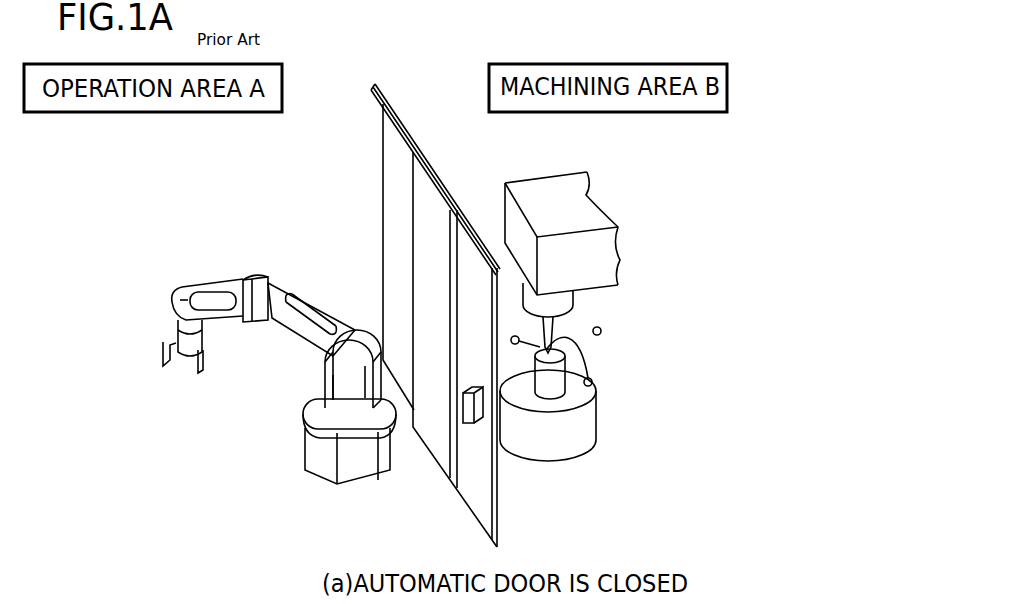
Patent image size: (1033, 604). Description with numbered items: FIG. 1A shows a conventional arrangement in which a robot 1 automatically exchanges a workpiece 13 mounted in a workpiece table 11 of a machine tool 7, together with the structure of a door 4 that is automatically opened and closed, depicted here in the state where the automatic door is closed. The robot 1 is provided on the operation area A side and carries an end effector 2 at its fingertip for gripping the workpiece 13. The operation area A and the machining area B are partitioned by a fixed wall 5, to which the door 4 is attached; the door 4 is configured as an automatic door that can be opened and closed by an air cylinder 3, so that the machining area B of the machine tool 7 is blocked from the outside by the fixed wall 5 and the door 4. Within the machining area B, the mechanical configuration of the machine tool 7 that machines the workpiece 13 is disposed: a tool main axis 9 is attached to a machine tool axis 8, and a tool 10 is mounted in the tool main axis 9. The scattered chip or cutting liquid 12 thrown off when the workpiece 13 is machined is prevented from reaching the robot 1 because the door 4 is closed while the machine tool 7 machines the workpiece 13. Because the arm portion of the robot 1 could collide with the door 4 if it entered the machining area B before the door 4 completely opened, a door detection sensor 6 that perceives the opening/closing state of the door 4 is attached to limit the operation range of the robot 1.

The robot 1 is at (275, 349).
The end effector 2 is at (187, 357).
The air cylinder 3 is at (446, 315).
The door 4 is at (437, 233).
The fixed wall 5 is at (400, 265).
The door detection sensor 6 is at (484, 408).
The machine tool 7 is at (608, 297).
The machine tool axis 8 is at (590, 263).
The tool main axis 9 is at (560, 305).
The tool 10 is at (563, 318).
The workpiece table 11 is at (578, 427).
The scattered chip or cutting liquid 12 is at (600, 334).
The workpiece 13 is at (568, 376).